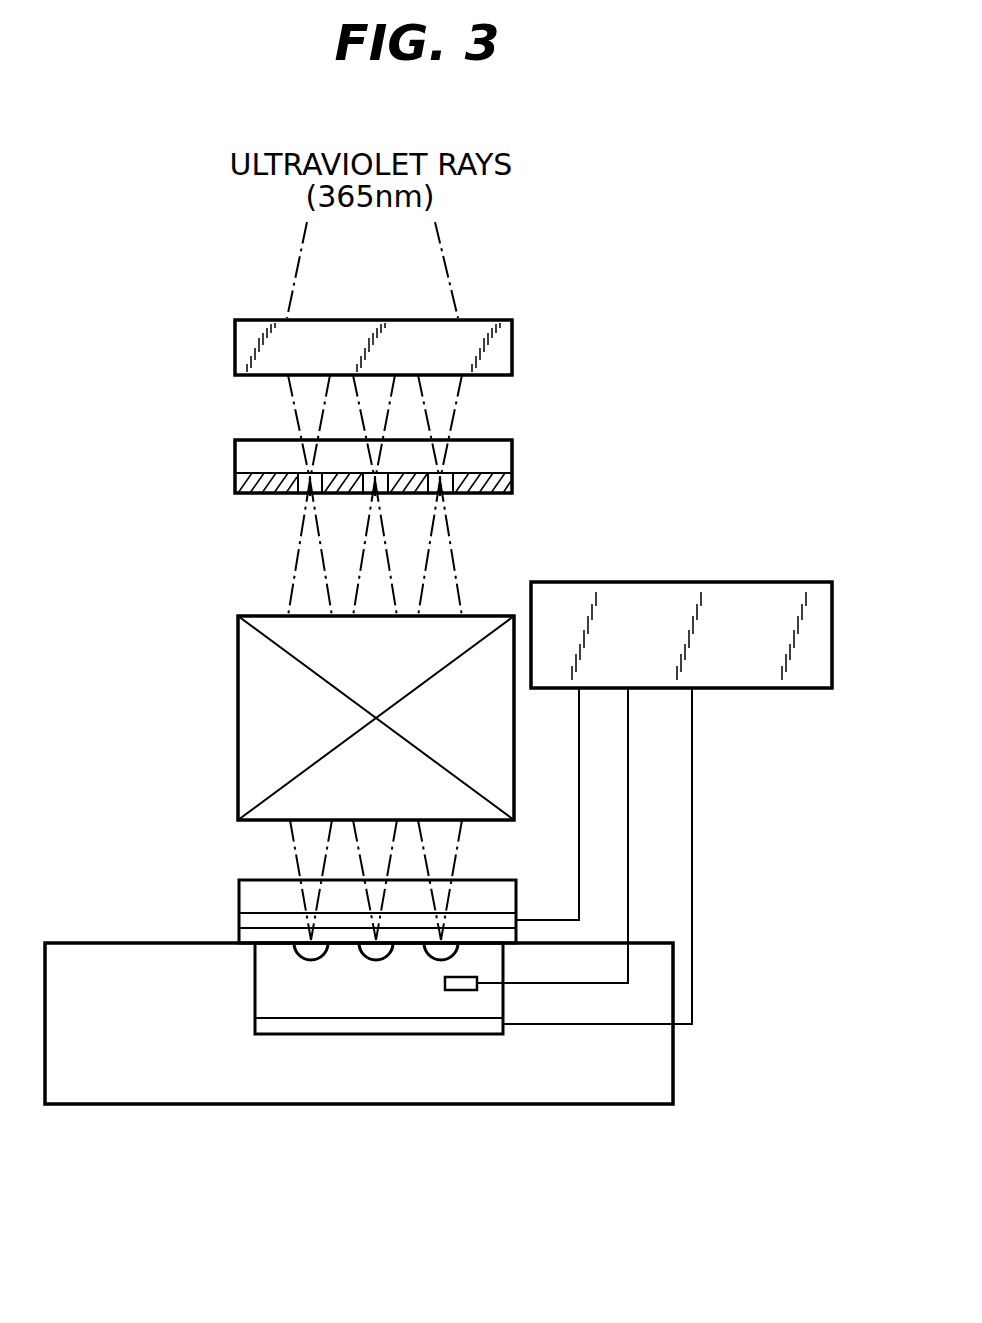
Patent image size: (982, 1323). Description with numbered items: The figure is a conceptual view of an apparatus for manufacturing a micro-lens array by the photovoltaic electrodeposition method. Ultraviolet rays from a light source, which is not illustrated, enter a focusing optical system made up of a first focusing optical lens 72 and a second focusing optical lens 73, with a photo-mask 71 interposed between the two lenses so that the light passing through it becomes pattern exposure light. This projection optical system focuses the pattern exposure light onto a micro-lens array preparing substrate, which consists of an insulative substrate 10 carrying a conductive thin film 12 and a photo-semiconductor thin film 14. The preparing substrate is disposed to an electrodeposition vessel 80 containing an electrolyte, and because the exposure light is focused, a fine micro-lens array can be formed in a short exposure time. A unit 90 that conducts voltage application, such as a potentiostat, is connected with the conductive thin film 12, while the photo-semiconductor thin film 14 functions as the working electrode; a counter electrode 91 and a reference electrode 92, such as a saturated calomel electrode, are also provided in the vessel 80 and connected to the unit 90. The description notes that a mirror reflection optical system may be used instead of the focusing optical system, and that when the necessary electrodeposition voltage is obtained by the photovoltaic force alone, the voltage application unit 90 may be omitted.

The insulative substrate 10 is at (247, 898).
The conductive thin film 12 is at (240, 922).
The photo-semiconductor thin film 14 is at (238, 940).
The photo-mask 71 is at (512, 455).
The first focusing optical lens 72 is at (512, 340).
The second focusing optical lens 73 is at (250, 712).
The electrodeposition vessel 80 is at (657, 1070).
The voltage application unit 90 is at (668, 597).
The counter electrode 91 is at (310, 1020).
The reference electrode 92 is at (457, 990).